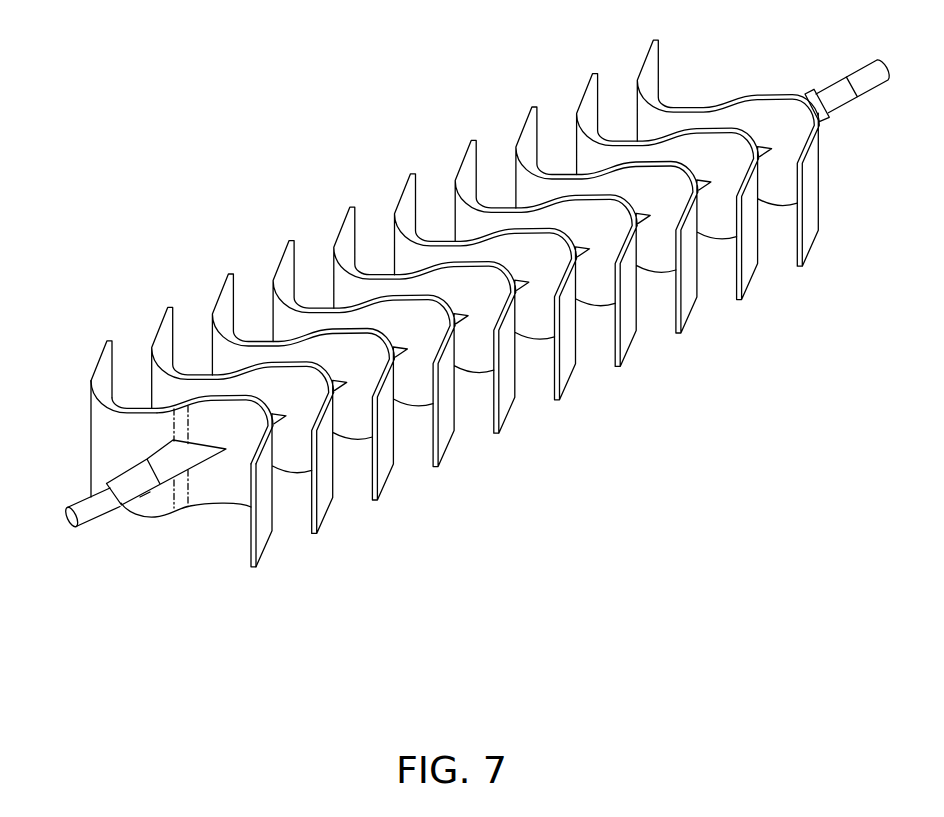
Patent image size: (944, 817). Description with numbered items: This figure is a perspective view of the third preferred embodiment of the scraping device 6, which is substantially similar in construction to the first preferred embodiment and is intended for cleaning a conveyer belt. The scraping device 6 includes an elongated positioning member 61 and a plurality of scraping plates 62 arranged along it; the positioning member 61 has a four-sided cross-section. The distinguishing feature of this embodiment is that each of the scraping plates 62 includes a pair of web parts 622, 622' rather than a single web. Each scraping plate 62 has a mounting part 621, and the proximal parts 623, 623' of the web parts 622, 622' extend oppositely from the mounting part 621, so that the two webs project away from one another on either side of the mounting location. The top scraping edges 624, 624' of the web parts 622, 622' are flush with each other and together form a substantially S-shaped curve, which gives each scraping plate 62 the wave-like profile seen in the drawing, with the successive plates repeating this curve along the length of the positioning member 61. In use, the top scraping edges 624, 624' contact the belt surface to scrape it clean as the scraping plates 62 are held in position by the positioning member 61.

The scraping device 6 is at (298, 192).
The positioning member 61 is at (822, 88).
The scraping plate 62 is at (523, 124).
The mounting part 621 is at (183, 500).
The web part 622 is at (142, 449).
The web part 622' is at (215, 490).
The proximal part 623 is at (122, 340).
The proximal part 623' is at (235, 524).
The top scraping edge 624 is at (91, 405).
The top scraping edge 624' is at (300, 499).